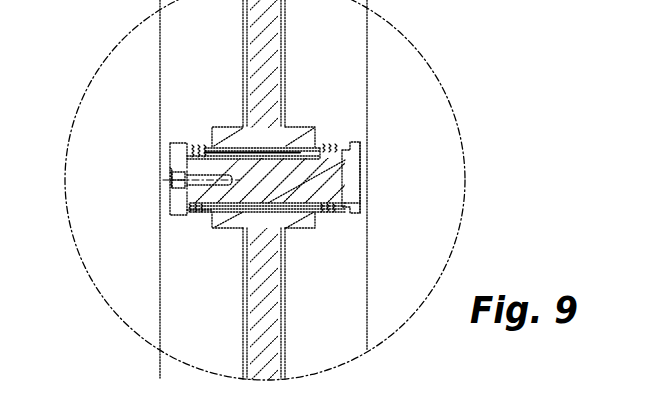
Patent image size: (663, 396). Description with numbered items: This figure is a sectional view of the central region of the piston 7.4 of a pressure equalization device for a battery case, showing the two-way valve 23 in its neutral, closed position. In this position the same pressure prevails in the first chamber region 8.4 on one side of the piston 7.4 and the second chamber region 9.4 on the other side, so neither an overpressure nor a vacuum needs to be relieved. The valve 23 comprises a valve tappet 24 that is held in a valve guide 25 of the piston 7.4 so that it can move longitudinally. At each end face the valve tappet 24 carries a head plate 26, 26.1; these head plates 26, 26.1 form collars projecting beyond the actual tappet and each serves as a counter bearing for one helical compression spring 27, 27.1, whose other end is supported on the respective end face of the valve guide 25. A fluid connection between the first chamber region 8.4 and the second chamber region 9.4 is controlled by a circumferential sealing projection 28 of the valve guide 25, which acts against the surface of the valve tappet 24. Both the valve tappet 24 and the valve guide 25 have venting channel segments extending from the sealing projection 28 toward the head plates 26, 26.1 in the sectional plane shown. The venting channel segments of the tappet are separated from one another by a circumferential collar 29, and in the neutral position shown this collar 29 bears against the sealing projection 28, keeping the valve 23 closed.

The piston 7.4 is at (232, 28).
The first chamber region 8.4 is at (443, 196).
The second chamber region 9.4 is at (118, 196).
The valve 23 is at (369, 147).
The valve tappet 24 is at (292, 197).
The valve guide 25 is at (296, 124).
The head plate 26 is at (351, 218).
The head plate 26.1 is at (172, 216).
The helical compression spring 27 is at (331, 141).
The helical compression spring 27.1 is at (195, 216).
The sealing projection 28 is at (256, 148).
The collar 29 is at (265, 205).